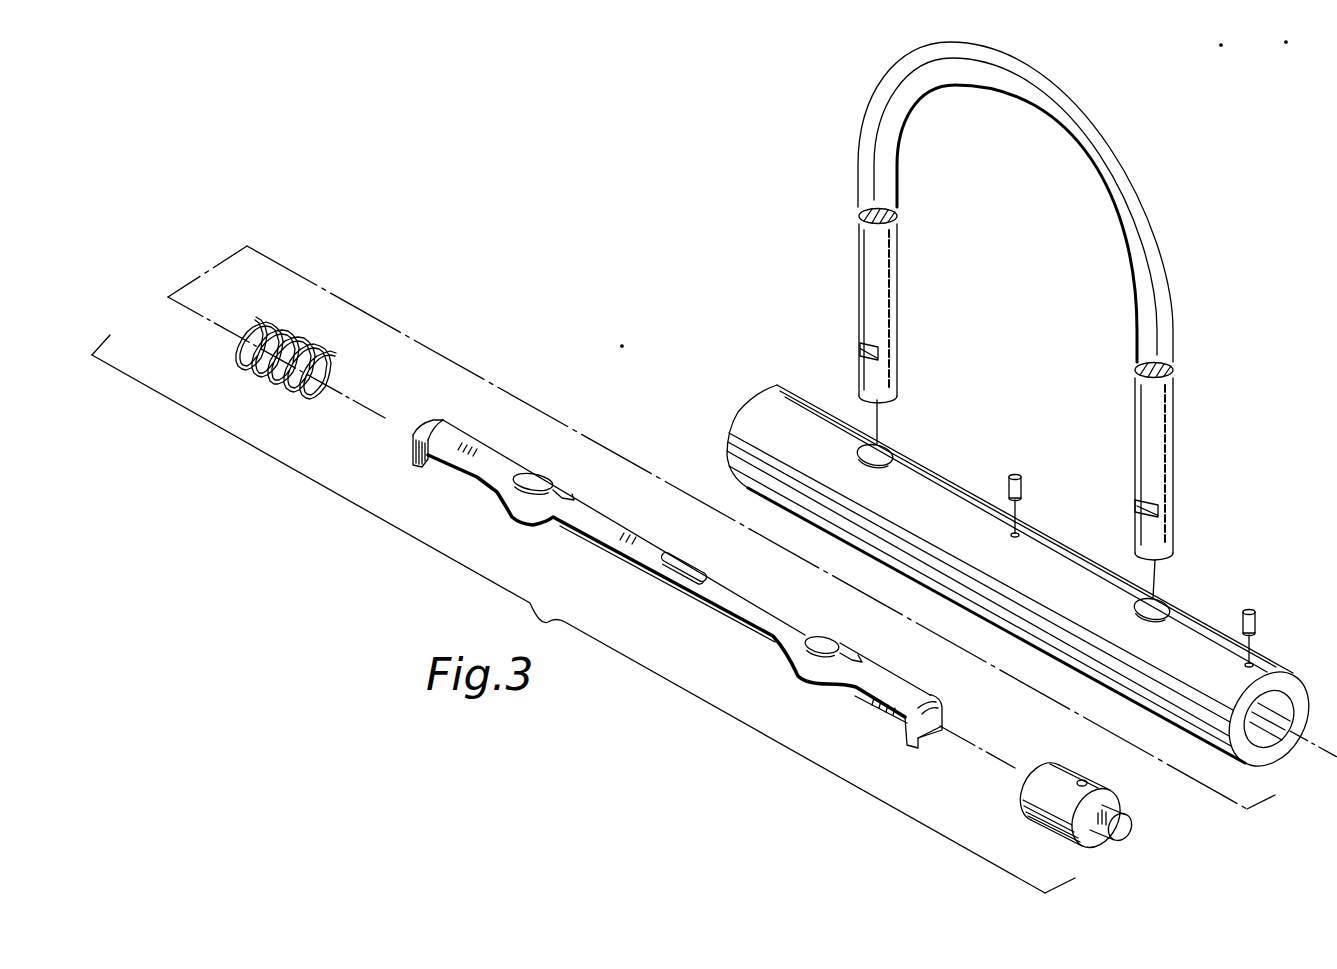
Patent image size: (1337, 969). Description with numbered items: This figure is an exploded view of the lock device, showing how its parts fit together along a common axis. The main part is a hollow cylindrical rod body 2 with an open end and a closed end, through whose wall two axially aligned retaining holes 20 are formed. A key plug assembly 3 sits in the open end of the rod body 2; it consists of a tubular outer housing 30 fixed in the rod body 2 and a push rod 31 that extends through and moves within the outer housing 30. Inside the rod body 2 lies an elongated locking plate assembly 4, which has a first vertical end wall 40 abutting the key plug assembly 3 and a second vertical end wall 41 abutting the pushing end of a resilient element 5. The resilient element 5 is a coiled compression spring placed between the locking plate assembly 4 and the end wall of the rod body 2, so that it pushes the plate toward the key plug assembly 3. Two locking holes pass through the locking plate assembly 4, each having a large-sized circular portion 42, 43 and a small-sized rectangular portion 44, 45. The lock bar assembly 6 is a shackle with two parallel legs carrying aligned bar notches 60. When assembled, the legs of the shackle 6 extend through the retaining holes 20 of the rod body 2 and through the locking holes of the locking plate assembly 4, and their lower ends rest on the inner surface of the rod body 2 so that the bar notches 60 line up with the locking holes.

The hollow cylindrical rod body 2 is at (797, 390).
The retaining holes 20 is at (878, 447).
The lock bar assembly 6 is at (1148, 210).
The bar notches 60 is at (1135, 508).
The resilient element 5 is at (276, 381).
The elongated locking plate assembly 4 is at (623, 556).
The second vertical end wall 41 is at (413, 457).
The first vertical end wall 40 is at (923, 738).
The large-sized circular portion 43 is at (514, 492).
The large-sized circular portion 42 is at (818, 652).
The small-sized rectangular portion 45 is at (550, 500).
The small-sized rectangular portion 44 is at (850, 662).
The tubular outer housing 30 is at (1056, 772).
The push rod 31 is at (1121, 807).
The key plug assembly 3 is at (1006, 810).